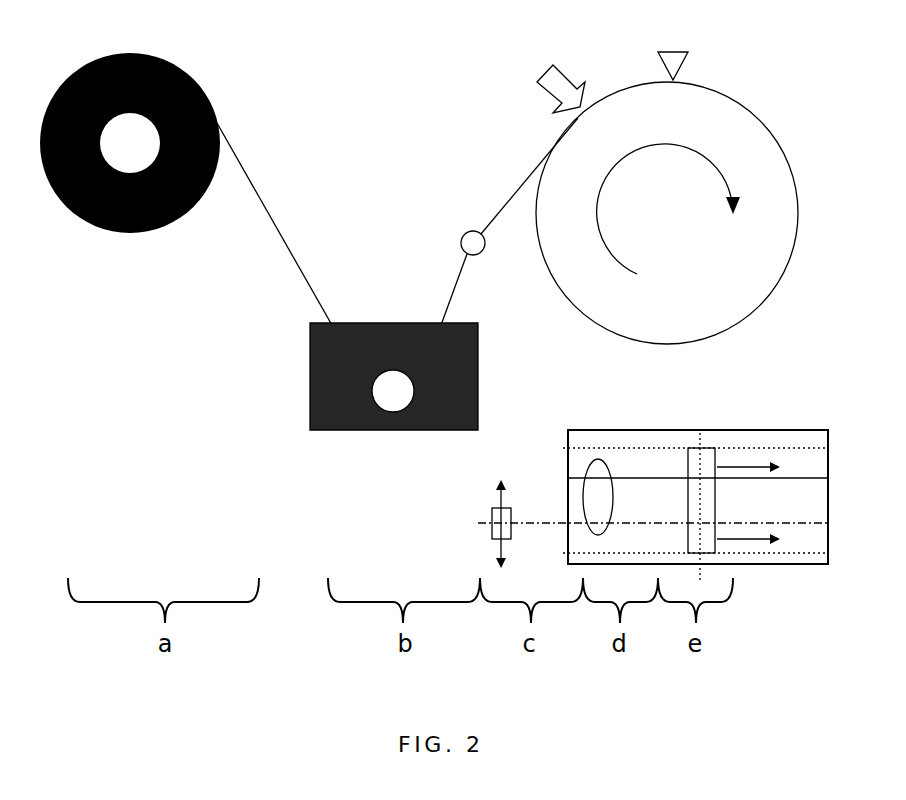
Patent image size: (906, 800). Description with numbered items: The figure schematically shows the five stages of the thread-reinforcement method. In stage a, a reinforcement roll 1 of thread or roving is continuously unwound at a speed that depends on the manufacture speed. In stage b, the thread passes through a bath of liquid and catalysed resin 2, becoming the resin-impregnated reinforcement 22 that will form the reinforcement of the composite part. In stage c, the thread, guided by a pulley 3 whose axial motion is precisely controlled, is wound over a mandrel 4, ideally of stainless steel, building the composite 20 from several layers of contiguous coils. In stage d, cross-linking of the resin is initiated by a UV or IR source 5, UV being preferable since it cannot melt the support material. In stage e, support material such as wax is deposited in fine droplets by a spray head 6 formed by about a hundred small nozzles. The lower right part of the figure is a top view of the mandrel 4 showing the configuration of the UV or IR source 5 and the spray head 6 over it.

The reel of threads or rovings 1 is at (75, 217).
The bath of liquid resin 2 is at (447, 353).
The pulley 3 is at (465, 234).
The mandrel 4 is at (778, 433).
The UV or IR source 5 is at (553, 82).
The spray head of the support material 6 is at (673, 52).
The composite 20 is at (612, 90).
The resin-impregnated reinforcement 22 is at (507, 198).